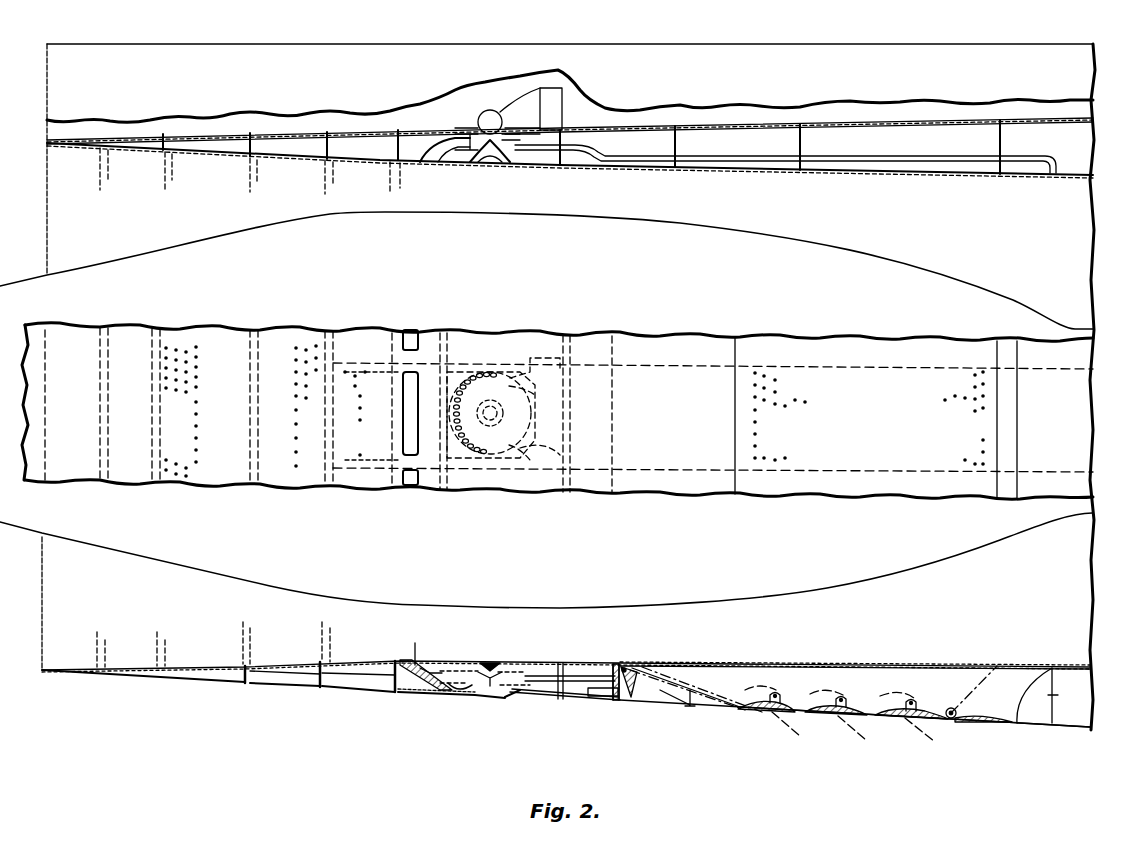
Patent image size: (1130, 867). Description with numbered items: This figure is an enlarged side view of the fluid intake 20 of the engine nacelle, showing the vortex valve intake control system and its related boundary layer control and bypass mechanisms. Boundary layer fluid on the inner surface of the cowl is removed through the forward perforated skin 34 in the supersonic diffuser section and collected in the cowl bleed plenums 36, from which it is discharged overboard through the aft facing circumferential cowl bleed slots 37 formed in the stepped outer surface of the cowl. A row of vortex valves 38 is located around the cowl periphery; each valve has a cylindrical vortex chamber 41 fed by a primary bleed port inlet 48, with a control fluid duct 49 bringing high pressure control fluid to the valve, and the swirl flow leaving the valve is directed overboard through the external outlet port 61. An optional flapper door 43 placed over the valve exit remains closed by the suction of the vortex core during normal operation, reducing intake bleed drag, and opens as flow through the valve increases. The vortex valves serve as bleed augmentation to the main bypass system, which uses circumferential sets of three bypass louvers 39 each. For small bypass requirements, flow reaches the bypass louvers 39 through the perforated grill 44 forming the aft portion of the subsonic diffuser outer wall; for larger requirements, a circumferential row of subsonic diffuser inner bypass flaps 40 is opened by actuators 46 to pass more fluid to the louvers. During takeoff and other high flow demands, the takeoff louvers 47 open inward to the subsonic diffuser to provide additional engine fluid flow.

The fluid intake 20 is at (244, 84).
The perforated skin 34 is at (172, 342).
The cowl bleed plenums 36 is at (340, 665).
The aft facing circumferential cowl bleed slots 37 is at (328, 694).
The vortex valves 38 is at (486, 170).
The bypass louvers 39 is at (892, 722).
The subsonic diffuser inner bypass flaps 40 is at (670, 666).
The cylindrical vortex chamber 41 is at (480, 410).
The flapper door 43 is at (478, 708).
The perforated grill 44 is at (792, 378).
The actuators 46 is at (600, 698).
The takeoff louvers 47 is at (986, 722).
The primary bleed port inlet 48 is at (412, 165).
The control fluid duct 49 is at (910, 160).
The external outlet port 61 is at (555, 100).